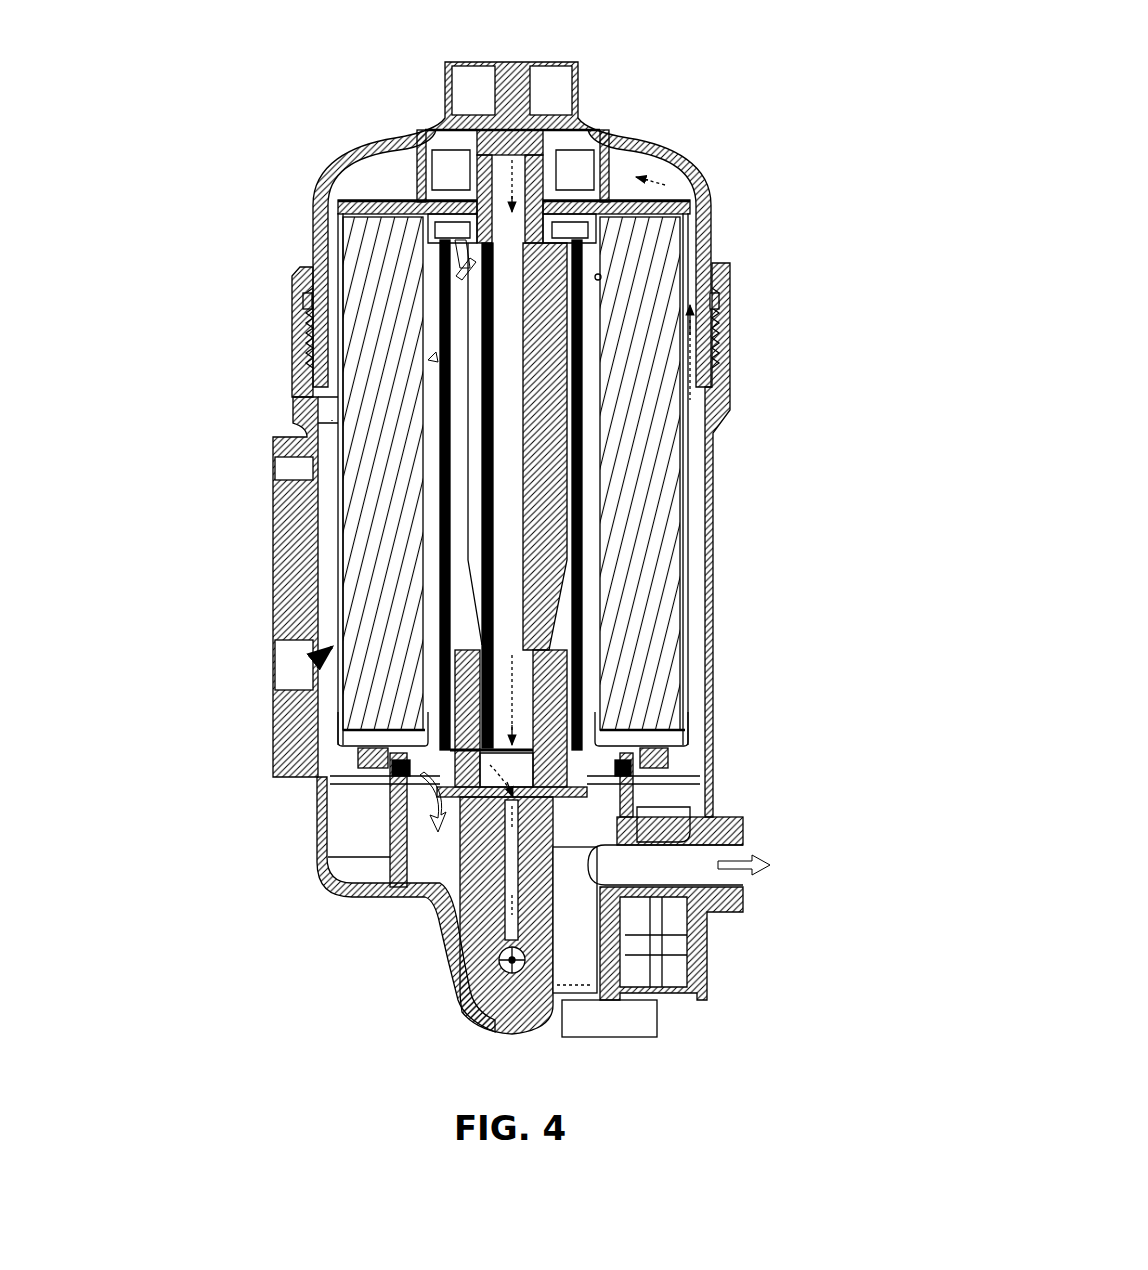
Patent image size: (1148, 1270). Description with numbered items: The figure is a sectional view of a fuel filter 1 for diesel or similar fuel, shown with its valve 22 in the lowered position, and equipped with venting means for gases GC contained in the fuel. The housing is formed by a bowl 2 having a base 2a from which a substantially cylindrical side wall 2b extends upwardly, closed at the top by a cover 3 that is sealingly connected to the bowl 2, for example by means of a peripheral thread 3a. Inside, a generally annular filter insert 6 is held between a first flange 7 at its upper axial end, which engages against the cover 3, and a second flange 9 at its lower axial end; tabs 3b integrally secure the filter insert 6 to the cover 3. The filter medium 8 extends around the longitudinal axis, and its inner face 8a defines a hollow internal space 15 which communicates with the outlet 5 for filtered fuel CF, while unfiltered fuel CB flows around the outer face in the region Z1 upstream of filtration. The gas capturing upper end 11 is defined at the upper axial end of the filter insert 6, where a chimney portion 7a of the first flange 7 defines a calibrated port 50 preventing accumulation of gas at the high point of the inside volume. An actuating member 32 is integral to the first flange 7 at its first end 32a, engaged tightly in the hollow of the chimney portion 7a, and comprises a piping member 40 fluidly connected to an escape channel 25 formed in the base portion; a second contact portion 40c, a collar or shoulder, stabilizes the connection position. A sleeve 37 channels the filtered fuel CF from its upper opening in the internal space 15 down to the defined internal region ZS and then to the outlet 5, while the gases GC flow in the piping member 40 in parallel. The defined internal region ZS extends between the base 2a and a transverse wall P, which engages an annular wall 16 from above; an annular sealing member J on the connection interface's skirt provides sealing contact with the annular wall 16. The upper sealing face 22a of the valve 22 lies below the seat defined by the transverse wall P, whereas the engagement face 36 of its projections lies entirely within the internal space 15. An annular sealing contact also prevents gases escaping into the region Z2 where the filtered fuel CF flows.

The fuel filter 1 is at (268, 100).
The bowl 2 is at (720, 570).
The base 2a is at (337, 895).
The side wall 2b is at (273, 763).
The cover 3 is at (722, 156).
The peripheral thread 3a is at (714, 334).
The tabs 3b is at (420, 147).
The outlet 5 is at (729, 899).
The filter insert 6 is at (694, 480).
The first flange 7 is at (350, 200).
The chimney portion 7a is at (548, 158).
The filter medium 8 is at (372, 518).
The inner face 8a is at (600, 275).
The second flange 9 is at (692, 742).
The gas capturing upper end 11 is at (548, 126).
The hollow internal space 15 is at (592, 668).
The annular wall 16 is at (384, 802).
The valve 22 is at (447, 927).
The upper sealing face 22a is at (403, 768).
The escape channel 25 is at (482, 1000).
The actuating member 32 is at (468, 312).
The first end 32a is at (472, 203).
The engagement face 36 is at (568, 642).
The sleeve 37 is at (580, 553).
The piping member 40 is at (510, 505).
The second contact portion 40c is at (490, 641).
The calibrated port 50 is at (506, 128).
The unfiltered fuel CB is at (306, 662).
The filtered fuel CF is at (423, 812).
The gases GC is at (658, 180).
The annular sealing member J is at (630, 787).
The transverse wall P is at (744, 839).
The region upstream of filtration Z1 is at (332, 568).
The region Z2 is at (432, 455).
The defined internal region ZS is at (422, 870).